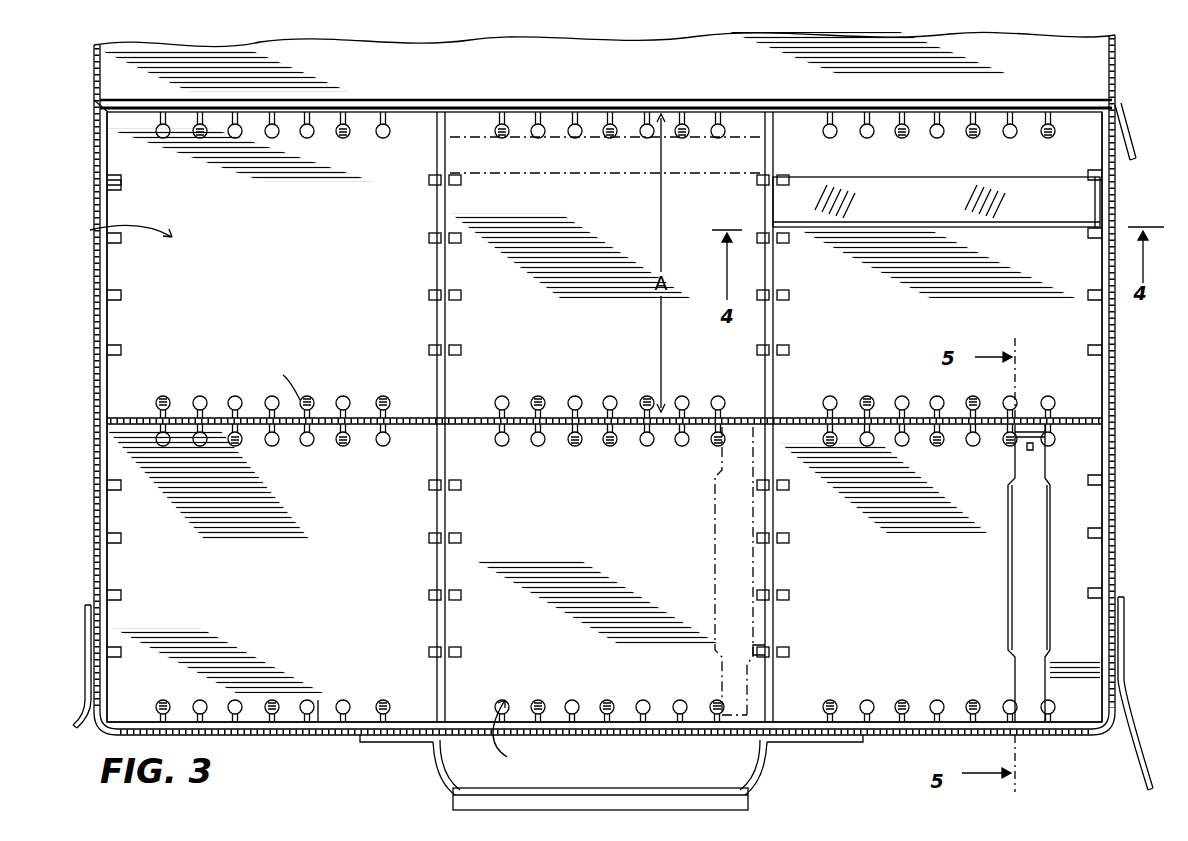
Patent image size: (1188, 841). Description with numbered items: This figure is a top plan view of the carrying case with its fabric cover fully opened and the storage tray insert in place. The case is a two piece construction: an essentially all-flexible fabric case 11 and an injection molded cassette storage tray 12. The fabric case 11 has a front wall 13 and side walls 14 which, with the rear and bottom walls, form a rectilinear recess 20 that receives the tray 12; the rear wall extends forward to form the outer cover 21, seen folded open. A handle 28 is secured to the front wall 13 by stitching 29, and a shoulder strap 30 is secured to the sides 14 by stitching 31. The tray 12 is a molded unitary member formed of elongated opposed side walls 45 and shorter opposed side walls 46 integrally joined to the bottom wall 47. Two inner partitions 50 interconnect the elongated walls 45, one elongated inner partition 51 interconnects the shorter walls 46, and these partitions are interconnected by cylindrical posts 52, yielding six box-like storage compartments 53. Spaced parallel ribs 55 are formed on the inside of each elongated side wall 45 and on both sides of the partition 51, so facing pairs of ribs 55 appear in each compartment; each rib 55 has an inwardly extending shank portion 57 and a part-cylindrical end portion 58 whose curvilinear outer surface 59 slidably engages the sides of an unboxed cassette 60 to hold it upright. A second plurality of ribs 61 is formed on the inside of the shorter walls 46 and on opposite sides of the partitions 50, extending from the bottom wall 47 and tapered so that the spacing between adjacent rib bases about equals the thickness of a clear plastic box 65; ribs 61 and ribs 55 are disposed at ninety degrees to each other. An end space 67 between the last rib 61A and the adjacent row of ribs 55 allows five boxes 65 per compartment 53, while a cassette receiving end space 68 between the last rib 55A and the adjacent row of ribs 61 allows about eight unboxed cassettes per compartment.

The flexible fabric case 11 is at (335, 738).
The cassette storage tray 12 is at (322, 708).
The front wall 13 is at (915, 738).
The side walls 14 is at (95, 452).
The rectilinear recess 20 is at (290, 740).
The outer cover 21 is at (1098, 82).
The handle 28 is at (725, 780).
The stitching 29 is at (393, 742).
The shoulder strap 30 is at (80, 708).
The stitching 31 is at (85, 625).
The elongated side walls 45 is at (335, 118).
The shorter side walls 46 is at (118, 268).
The bottom wall 47 is at (297, 491).
The inner partitions 50 is at (445, 330).
The elongated inner partition 51 is at (538, 460).
The cylindrical posts 52 is at (448, 428).
The storage compartments 53 is at (603, 417).
The ribs 55 is at (260, 165).
The last rib 55A is at (505, 705).
The shank portion 57 is at (577, 133).
The part-cylindrical end portion 58 is at (684, 133).
The curvilinear outer surface 59 is at (270, 130).
The unboxed cassette 60 is at (712, 515).
The ribs 61 is at (120, 300).
The last rib 61A is at (121, 185).
The clear plastic box 65 is at (555, 180).
The end space 67 is at (115, 145).
The cassette receiving end space 68 is at (460, 716).